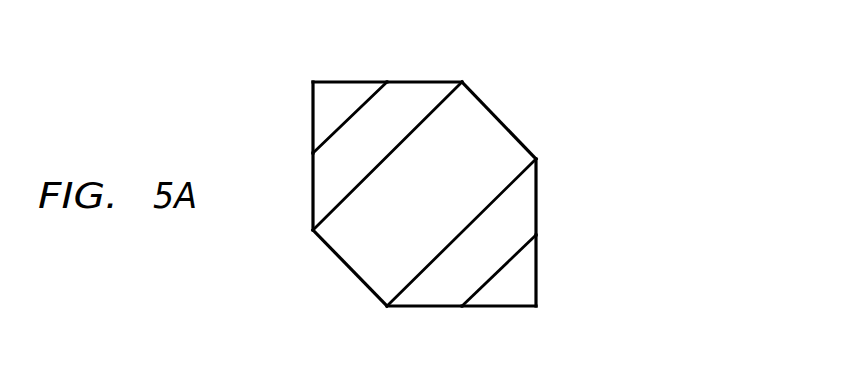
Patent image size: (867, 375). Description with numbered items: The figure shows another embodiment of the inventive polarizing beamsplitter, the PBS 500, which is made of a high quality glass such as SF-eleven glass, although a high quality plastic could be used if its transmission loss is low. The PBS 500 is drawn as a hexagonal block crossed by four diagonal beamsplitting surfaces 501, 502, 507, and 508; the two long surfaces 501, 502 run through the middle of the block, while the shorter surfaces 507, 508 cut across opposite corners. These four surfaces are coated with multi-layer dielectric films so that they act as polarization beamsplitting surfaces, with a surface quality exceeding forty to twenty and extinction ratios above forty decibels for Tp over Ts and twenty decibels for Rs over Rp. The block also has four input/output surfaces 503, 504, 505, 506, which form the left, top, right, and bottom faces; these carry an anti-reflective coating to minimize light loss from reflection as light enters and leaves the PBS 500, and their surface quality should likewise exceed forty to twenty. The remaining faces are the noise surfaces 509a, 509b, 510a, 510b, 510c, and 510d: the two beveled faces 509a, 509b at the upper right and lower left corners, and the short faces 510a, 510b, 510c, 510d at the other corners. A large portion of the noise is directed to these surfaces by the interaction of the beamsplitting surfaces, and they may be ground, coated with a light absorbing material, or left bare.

The PBS 500 is at (500, 62).
The beamsplitting surface 501 is at (423, 123).
The beamsplitting surface 502 is at (428, 263).
The input/output surface 503 is at (312, 187).
The input/output surface 504 is at (425, 80).
The input/output surface 505 is at (537, 197).
The input/output surface 506 is at (423, 308).
The beamsplitting surface 507 is at (340, 133).
The beamsplitting surface 508 is at (482, 282).
The noise surface 509a is at (520, 102).
The noise surface 509b is at (345, 272).
The noise surface 510a is at (497, 308).
The noise surface 510b is at (537, 278).
The noise surface 510c is at (347, 80).
The noise surface 510d is at (312, 113).